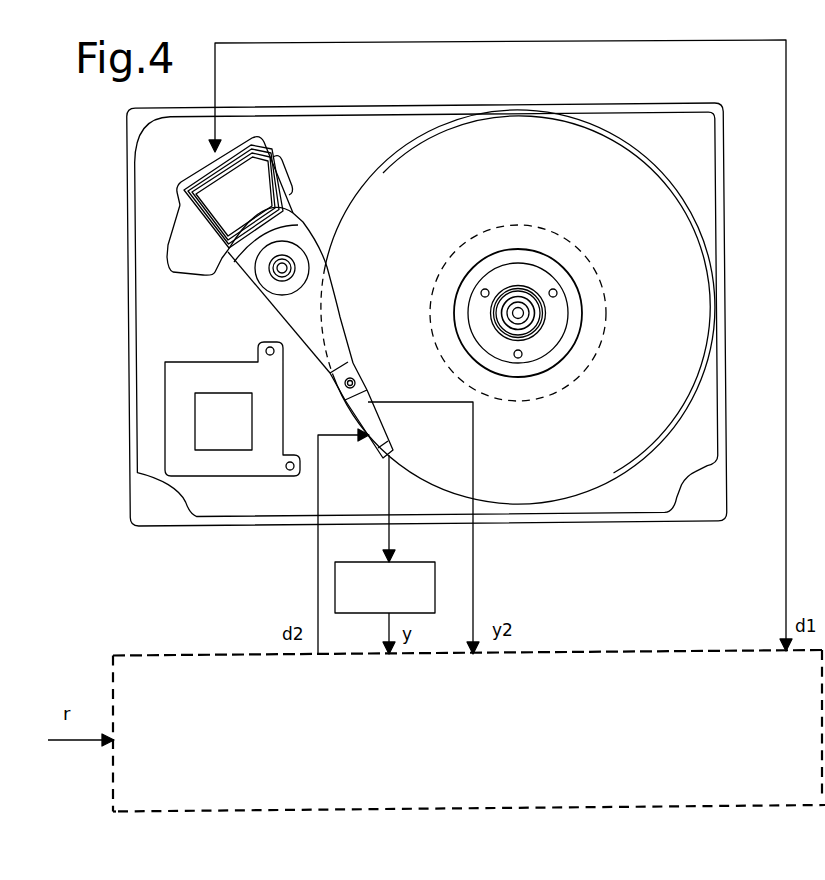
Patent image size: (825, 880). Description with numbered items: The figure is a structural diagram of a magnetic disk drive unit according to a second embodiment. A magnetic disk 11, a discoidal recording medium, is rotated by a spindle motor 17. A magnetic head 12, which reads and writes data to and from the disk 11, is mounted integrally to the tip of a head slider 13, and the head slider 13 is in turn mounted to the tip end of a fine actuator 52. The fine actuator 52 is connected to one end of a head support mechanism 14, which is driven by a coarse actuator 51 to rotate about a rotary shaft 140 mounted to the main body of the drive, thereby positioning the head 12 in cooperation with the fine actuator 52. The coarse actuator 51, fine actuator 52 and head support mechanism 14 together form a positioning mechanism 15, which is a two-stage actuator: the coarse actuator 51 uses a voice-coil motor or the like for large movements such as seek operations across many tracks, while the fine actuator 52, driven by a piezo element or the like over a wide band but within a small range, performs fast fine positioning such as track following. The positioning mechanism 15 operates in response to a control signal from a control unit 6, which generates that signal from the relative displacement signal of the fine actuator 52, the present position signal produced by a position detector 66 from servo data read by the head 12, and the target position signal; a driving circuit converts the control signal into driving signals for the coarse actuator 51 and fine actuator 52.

The magnetic disk 11 is at (538, 132).
The spindle motor 17 is at (527, 290).
The coarse actuator 51 is at (275, 178).
The rotary shaft 140 is at (290, 250).
The head support mechanism 14 is at (337, 353).
The fine actuator 52 is at (370, 403).
The head slider 13 is at (387, 457).
The magnetic head 12 is at (377, 460).
The positioning mechanism 15 is at (255, 285).
The position detector 66 is at (407, 560).
The control unit 6 is at (110, 663).